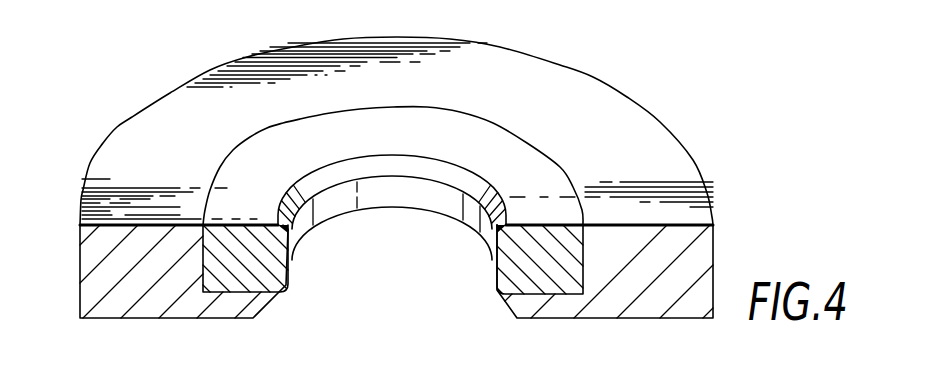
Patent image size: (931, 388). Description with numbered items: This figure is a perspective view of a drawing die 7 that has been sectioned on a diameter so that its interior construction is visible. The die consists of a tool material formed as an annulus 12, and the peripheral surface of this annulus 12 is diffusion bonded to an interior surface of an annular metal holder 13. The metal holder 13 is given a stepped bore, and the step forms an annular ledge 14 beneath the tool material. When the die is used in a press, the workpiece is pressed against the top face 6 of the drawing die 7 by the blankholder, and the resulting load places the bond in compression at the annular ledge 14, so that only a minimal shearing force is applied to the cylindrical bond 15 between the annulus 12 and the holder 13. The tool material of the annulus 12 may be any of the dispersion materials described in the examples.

The top face 6 is at (297, 147).
The drawing die 7 is at (128, 118).
The annulus 12 is at (377, 192).
The annular metal holder 13 is at (262, 65).
The annular ledge 14 is at (210, 291).
The cylindrical bond 15 is at (203, 257).